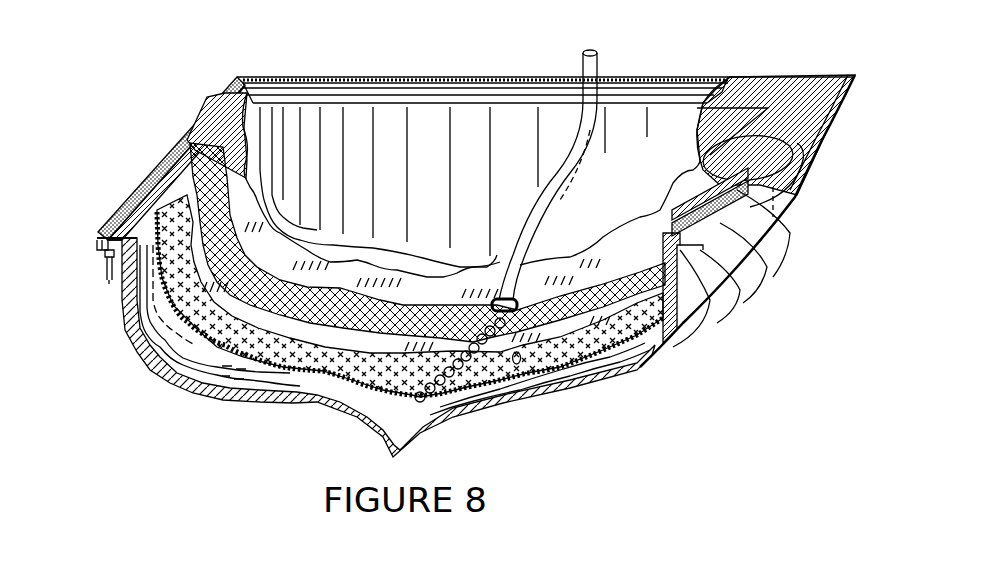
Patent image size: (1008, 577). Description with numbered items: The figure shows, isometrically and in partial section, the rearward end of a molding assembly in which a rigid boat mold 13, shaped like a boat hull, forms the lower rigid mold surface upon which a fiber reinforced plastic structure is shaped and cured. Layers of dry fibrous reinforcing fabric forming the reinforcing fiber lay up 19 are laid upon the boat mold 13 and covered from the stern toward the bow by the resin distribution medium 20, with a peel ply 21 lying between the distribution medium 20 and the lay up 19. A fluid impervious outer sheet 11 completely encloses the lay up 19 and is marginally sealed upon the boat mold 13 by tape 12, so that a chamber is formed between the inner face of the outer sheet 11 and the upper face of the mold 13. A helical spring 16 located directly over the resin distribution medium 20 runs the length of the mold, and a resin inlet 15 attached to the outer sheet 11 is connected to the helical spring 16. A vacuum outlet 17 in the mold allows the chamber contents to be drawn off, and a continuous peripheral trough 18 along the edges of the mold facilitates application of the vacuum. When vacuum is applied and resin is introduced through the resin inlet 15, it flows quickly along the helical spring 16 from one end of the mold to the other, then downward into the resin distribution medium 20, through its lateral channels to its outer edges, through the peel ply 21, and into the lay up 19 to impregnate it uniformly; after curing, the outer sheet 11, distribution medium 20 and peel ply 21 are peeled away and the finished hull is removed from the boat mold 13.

The fluid impervious outer sheet 11 is at (207, 97).
The tape 12 is at (167, 160).
The rigid boat mold 13 is at (243, 402).
The resin inlet 15 is at (600, 53).
The helical spring 16 is at (440, 400).
The vacuum outlet 17 is at (108, 284).
The continuous peripheral trough 18 is at (138, 213).
The reinforcing fiber lay up 19 is at (210, 330).
The resin distribution medium 20 is at (190, 143).
The peel ply 21 is at (165, 177).